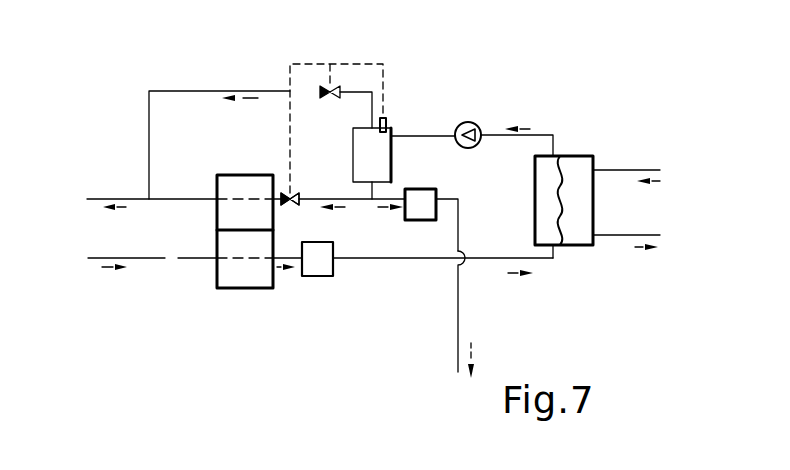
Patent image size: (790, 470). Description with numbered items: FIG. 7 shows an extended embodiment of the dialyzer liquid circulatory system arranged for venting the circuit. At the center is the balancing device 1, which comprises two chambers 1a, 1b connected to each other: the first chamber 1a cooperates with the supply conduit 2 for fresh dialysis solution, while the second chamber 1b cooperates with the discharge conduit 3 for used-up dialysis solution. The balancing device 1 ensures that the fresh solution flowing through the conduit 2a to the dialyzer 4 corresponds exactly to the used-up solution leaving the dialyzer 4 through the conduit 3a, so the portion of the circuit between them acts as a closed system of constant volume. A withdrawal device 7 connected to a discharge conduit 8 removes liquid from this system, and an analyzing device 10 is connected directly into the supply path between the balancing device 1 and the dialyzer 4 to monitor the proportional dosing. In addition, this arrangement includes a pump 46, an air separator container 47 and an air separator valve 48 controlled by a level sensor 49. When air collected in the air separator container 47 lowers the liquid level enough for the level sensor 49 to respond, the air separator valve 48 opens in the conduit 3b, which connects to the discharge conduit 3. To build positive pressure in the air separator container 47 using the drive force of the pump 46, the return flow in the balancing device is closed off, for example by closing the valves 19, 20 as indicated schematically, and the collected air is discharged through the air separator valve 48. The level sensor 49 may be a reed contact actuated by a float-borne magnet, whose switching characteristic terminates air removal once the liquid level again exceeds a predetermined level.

The balancing device 1 is at (217, 246).
The first chamber 1a is at (239, 291).
The second chamber 1b is at (243, 178).
The supply conduit 2 is at (98, 260).
The conduit 2a is at (379, 262).
The discharge conduit 3 is at (105, 196).
The conduit 3a is at (540, 135).
The conduit 3b is at (176, 91).
The dialyzer 4 is at (544, 202).
The withdrawal device 7 is at (420, 217).
The discharge conduit 8 is at (458, 320).
The analyzing device 10 is at (318, 277).
The valve 19 is at (296, 193).
The valve 20 is at (290, 199).
The pump 46 is at (467, 122).
The air separator container 47 is at (368, 150).
The air separator valve 48 is at (336, 87).
The level sensor 49 is at (388, 123).